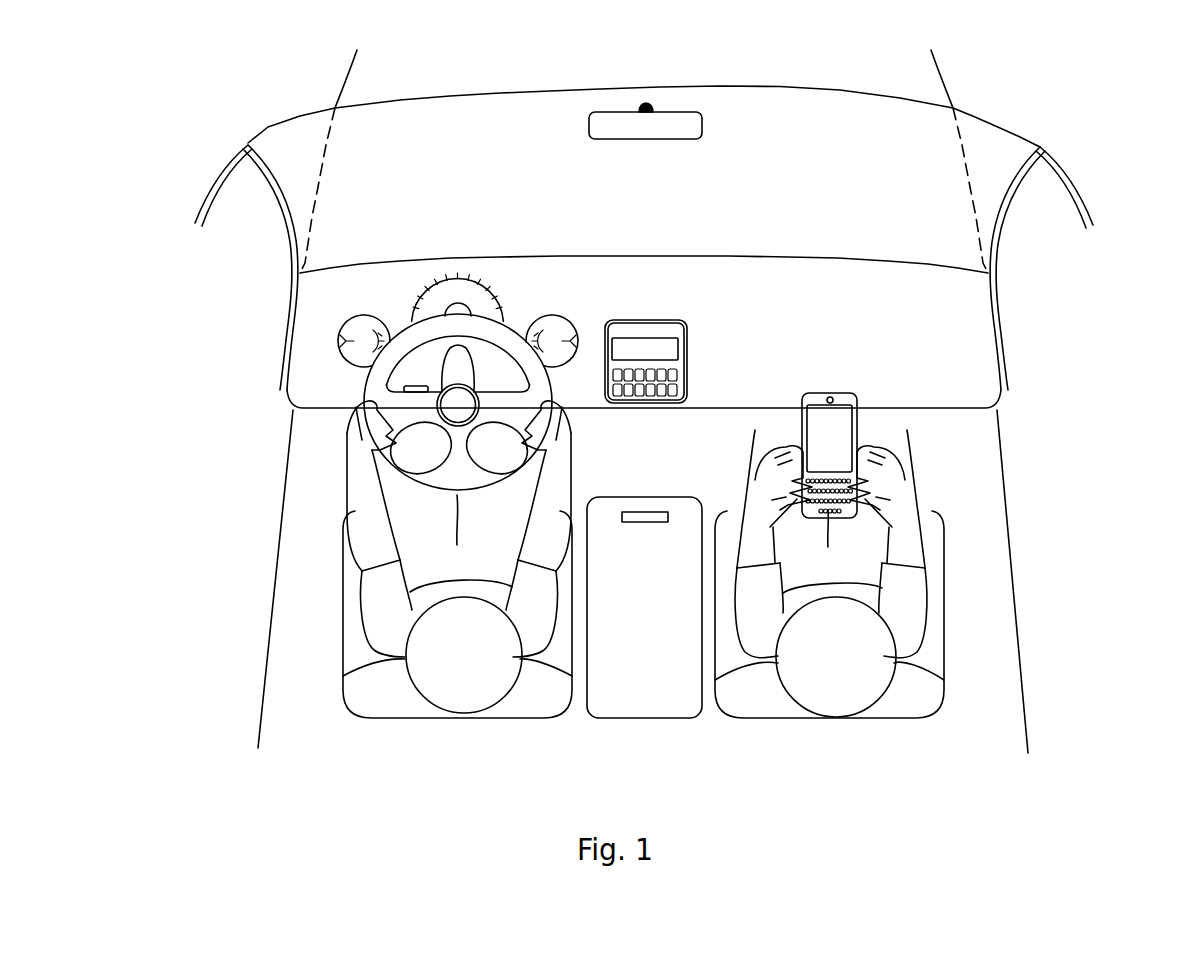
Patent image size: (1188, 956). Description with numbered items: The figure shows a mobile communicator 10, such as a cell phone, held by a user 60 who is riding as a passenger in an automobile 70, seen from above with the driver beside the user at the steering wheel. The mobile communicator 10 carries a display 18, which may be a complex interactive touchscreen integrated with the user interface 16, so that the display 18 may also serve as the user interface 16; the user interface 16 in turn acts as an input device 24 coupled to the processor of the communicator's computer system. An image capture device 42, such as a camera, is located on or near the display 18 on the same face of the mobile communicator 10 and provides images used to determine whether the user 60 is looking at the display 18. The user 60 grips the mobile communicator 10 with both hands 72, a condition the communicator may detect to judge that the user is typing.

The mobile communicator 10 is at (972, 402).
The user interface 16 is at (974, 495).
The display 18 is at (858, 413).
The input device 24 is at (850, 499).
The image capture device 42 is at (833, 399).
The user 60 is at (923, 570).
The automobile 70 is at (312, 298).
The hands 72 is at (887, 465).